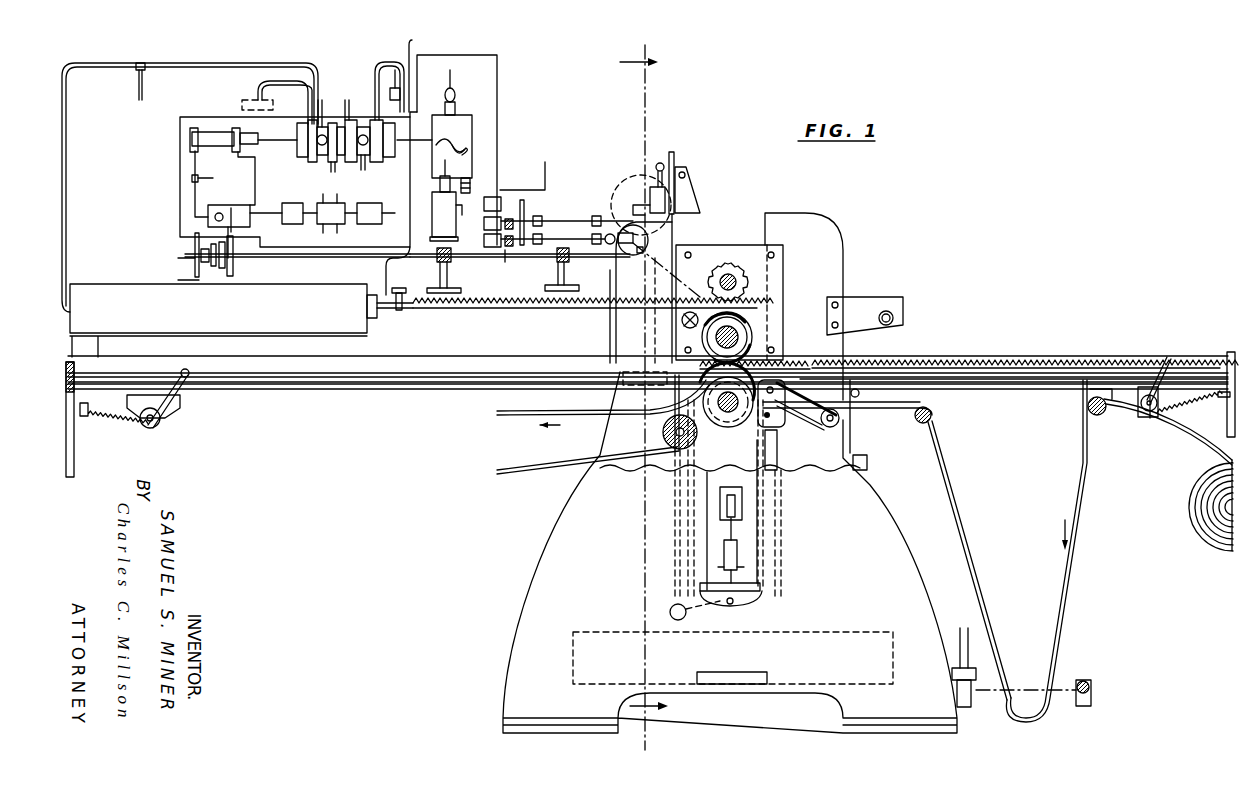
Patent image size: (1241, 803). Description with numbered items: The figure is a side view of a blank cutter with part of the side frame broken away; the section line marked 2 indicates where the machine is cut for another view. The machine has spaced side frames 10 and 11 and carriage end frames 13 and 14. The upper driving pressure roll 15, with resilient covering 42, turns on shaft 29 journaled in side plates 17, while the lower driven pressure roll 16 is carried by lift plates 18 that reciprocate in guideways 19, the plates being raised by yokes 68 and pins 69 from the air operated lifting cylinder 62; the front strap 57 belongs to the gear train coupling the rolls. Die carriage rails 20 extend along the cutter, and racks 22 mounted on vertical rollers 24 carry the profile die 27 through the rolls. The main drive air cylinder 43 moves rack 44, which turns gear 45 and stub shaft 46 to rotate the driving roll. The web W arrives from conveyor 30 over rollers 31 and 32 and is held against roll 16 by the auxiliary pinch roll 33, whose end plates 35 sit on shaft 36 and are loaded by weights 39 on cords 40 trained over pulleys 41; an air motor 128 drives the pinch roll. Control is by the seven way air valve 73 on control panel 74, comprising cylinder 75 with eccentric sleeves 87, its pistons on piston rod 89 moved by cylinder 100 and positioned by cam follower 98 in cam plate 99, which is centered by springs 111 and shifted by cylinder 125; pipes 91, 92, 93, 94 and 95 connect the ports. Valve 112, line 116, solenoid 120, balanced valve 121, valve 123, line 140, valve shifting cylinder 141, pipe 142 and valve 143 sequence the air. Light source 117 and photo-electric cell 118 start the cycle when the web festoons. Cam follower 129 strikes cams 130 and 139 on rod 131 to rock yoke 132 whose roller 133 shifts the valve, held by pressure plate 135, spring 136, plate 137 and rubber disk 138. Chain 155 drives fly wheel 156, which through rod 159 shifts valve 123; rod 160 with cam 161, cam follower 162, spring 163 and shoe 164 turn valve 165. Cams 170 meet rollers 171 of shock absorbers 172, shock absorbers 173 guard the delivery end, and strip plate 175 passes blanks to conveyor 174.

The section line 2- 2 is at (644, 388).
The side frame 10 is at (893, 529).
The side frame 11 is at (838, 243).
The carriage end frame 13 is at (1228, 352).
The carriage end frame 14 is at (333, 392).
The driving pressure roll 15 is at (751, 333).
The driven pressure roll 16 is at (740, 428).
The side plate 17 is at (735, 262).
The lift plate 18 is at (763, 587).
The guideway 19 is at (778, 479).
The die carriage rail 20 is at (388, 392).
The rack 22 is at (1103, 358).
The vertical roller 24 is at (1138, 412).
The profile die 27 is at (1050, 379).
The shaft 29 is at (745, 343).
The conveyor 30 is at (1215, 531).
The roller 31 is at (1100, 418).
The roller 32 is at (940, 455).
The auxiliary pinch roll 33 is at (790, 363).
The end plate 35 is at (765, 450).
The shaft 36 is at (800, 432).
The weight 39 is at (870, 458).
The cord 40 is at (866, 410).
The pulley 41 is at (858, 392).
The resilient covering 42 is at (748, 318).
The main drive air cylinder 43 is at (284, 336).
The rack 44 is at (516, 308).
The gear 45 is at (728, 264).
The stub shaft 46 is at (737, 276).
The front strap 57 is at (682, 324).
The lifting cylinder 62 is at (770, 649).
The yoke 68 is at (743, 521).
The pin 69 is at (738, 561).
The seven way air valve 73 is at (352, 100).
The control panel 74 is at (498, 88).
The cylinder 75 is at (300, 162).
The eccentric sleeve 87 is at (331, 168).
The piston rod 89 is at (284, 145).
The pipe 91 is at (308, 101).
The pipe 92 is at (389, 62).
The pipe 93 is at (345, 116).
The pipe 94 is at (240, 62).
The pipe 95 is at (410, 58).
The cam follower 98 is at (452, 146).
The cam plate 99 is at (462, 136).
The cylinder 100 is at (212, 128).
The spring 111 is at (449, 100).
The air supply valve 112 is at (250, 212).
The line 116 is at (255, 178).
The light source 117 is at (1094, 690).
The photo-electric cell 118 is at (975, 700).
The solenoid 120 is at (493, 197).
The balanced valve 121 is at (503, 218).
The valve 123 is at (500, 262).
The cylinder 125 is at (432, 222).
The air motor 128 is at (826, 432).
The cam follower 129 is at (399, 312).
The cam 130 is at (572, 262).
The rod 131 is at (512, 262).
The yoke 132 is at (235, 249).
The roller 133 is at (215, 217).
The pressure plate 135 is at (217, 279).
The spring 136 is at (203, 275).
The plate 137 is at (192, 262).
The rubber disk 138 is at (233, 279).
The cam 139 is at (448, 295).
The line 140 is at (194, 194).
The valve shifting cylinder 141 is at (295, 224).
The pipe 142 is at (213, 167).
The valve 143 is at (352, 227).
The chain 155 is at (650, 240).
The fly wheel 156 is at (629, 203).
The rod 159 is at (602, 234).
The rod 160 is at (675, 162).
The cam 161 is at (658, 163).
The cam follower 162 is at (664, 168).
The spring 163 is at (648, 197).
The shoe 164 is at (526, 219).
The valve 165 is at (490, 232).
The cam 170 is at (1150, 385).
The roller 171 is at (1168, 353).
The shock absorber 172 is at (1175, 411).
The shock absorber 173 is at (170, 421).
The conveyor 174 is at (494, 421).
The strip plate 175 is at (696, 425).
The web W is at (1068, 593).